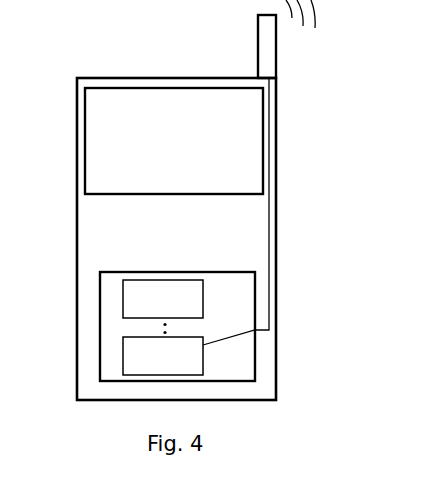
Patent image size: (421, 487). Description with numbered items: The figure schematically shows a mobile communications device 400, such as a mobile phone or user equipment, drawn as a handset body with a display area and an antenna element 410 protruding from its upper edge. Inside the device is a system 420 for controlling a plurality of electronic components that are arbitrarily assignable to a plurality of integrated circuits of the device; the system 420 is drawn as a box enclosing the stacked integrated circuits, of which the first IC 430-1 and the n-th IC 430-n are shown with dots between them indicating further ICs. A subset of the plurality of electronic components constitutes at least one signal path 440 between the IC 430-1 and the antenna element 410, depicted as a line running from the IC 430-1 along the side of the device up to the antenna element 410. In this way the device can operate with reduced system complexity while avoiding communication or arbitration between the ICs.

The mobile communications device 400 is at (364, 248).
The antenna element 410 is at (277, 37).
The system for controlling a plurality of electronic components 420 is at (130, 271).
The integrated circuit 430-n is at (163, 299).
The integrated circuit 430-1 is at (163, 356).
The signal path 440 is at (237, 340).